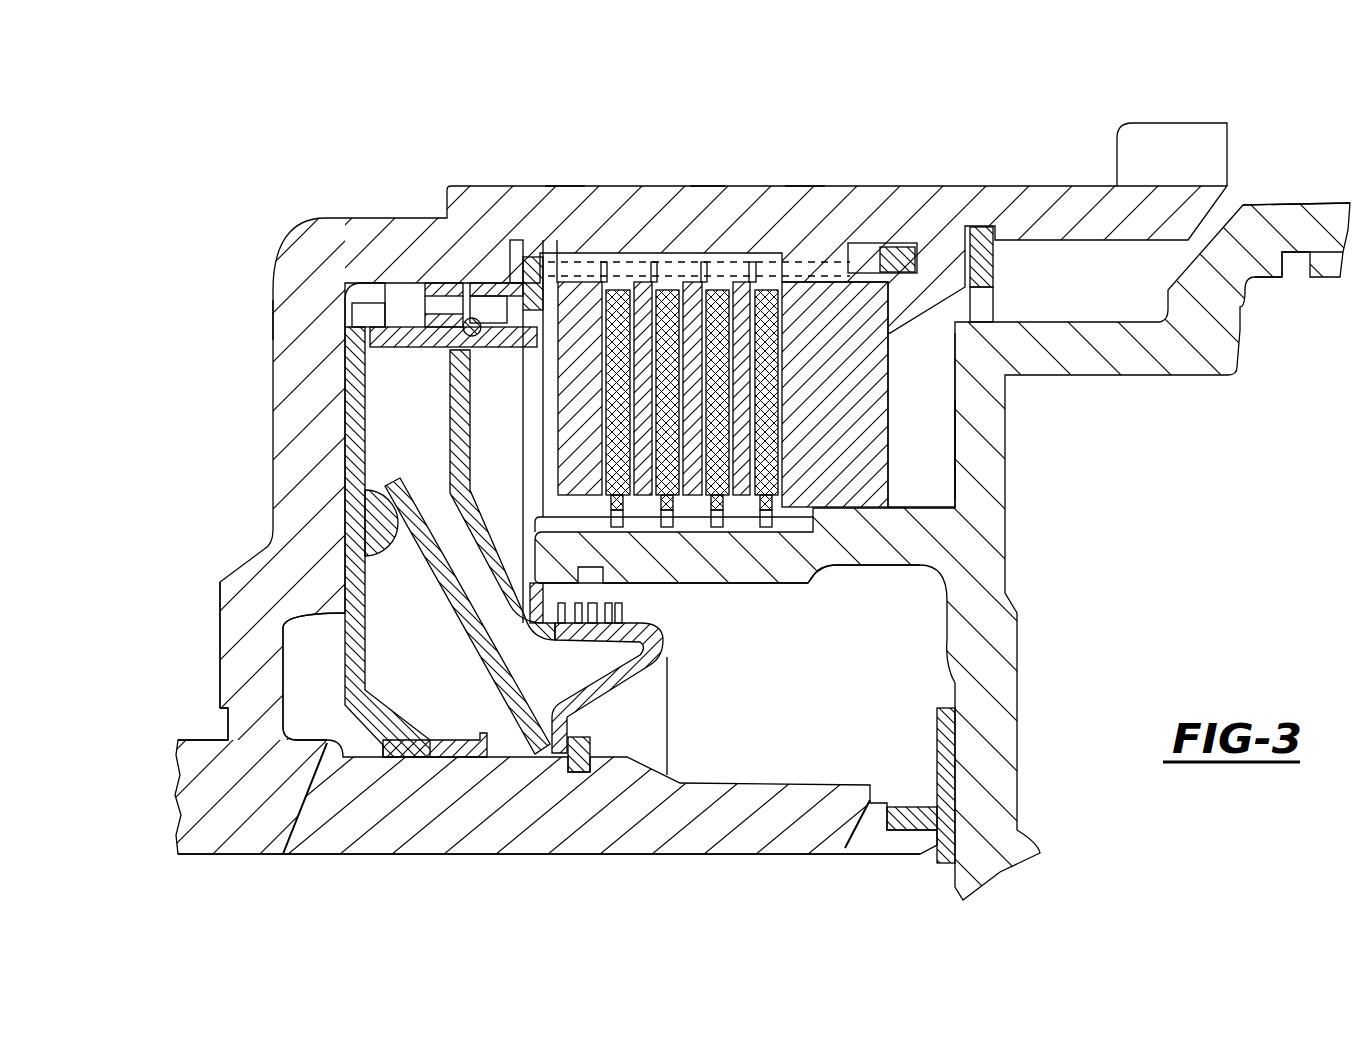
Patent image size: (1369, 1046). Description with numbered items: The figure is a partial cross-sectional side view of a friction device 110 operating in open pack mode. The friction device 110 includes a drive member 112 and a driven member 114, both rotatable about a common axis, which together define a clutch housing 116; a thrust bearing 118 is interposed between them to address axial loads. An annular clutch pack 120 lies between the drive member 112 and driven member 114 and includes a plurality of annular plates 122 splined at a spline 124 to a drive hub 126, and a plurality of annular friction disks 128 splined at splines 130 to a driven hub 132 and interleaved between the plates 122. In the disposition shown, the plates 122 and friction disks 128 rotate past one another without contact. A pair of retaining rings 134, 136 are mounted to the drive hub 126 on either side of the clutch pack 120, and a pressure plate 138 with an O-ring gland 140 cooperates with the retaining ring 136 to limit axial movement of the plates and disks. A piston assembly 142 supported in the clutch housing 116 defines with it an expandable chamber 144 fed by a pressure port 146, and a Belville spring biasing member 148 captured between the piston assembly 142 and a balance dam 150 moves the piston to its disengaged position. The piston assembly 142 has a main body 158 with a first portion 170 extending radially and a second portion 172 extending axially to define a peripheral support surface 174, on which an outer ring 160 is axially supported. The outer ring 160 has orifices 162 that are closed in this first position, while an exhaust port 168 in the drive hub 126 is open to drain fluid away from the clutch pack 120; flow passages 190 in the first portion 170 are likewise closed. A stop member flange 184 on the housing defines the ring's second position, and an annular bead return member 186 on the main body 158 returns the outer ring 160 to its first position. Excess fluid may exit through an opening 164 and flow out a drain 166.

The friction device 110 is at (1012, 158).
The drive member 112 is at (625, 185).
The driven member 114 is at (1020, 547).
The clutch housing 116 is at (210, 665).
The thrust bearing 118 is at (955, 750).
The annular clutch pack 120 is at (547, 267).
The annular plates 122 is at (640, 462).
The spline 124 is at (803, 185).
The drive hub 126 is at (703, 185).
The annular friction disks 128 is at (758, 412).
The splines 130 is at (703, 530).
The driven hub 132 is at (800, 575).
The retaining ring 134 is at (563, 188).
The retaining ring 136 is at (998, 262).
The pressure plate 138 is at (885, 383).
The O-ring gland 140 is at (905, 250).
The piston assembly 142 is at (350, 527).
The expandable chamber 144 is at (300, 690).
The pressure port 146 is at (295, 828).
The biasing member 148 is at (465, 650).
The balance dam 150 is at (667, 660).
The main body 158 is at (295, 615).
The outer ring 160 is at (432, 318).
The orifices 162 is at (392, 290).
The opening 164 is at (945, 482).
The drain 166 is at (1258, 205).
The exhaust port 168 is at (470, 280).
The first portion 170 is at (353, 432).
The second portion 172 is at (468, 365).
The peripheral support surface 174 is at (412, 352).
The stop member 184 is at (488, 282).
The return member 186 is at (500, 300).
The flow passages 190 is at (345, 315).